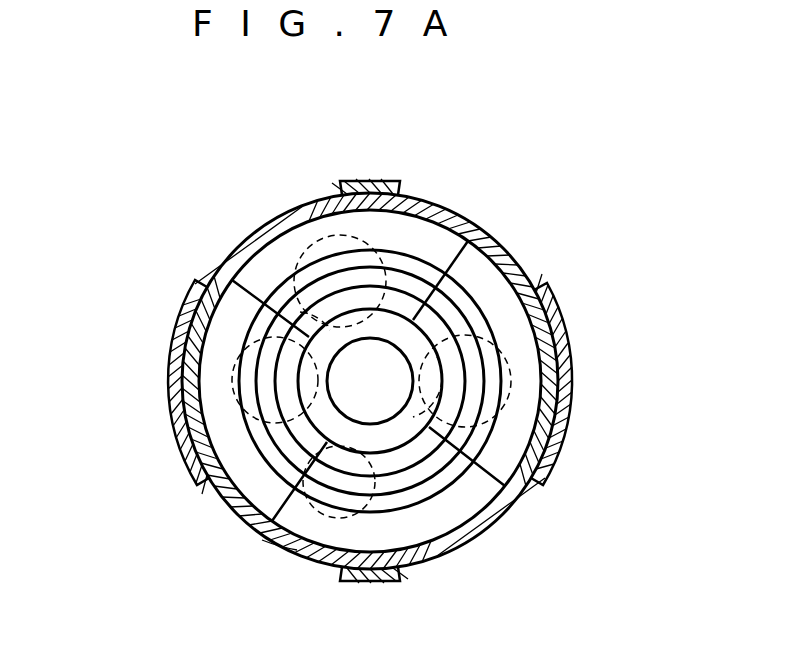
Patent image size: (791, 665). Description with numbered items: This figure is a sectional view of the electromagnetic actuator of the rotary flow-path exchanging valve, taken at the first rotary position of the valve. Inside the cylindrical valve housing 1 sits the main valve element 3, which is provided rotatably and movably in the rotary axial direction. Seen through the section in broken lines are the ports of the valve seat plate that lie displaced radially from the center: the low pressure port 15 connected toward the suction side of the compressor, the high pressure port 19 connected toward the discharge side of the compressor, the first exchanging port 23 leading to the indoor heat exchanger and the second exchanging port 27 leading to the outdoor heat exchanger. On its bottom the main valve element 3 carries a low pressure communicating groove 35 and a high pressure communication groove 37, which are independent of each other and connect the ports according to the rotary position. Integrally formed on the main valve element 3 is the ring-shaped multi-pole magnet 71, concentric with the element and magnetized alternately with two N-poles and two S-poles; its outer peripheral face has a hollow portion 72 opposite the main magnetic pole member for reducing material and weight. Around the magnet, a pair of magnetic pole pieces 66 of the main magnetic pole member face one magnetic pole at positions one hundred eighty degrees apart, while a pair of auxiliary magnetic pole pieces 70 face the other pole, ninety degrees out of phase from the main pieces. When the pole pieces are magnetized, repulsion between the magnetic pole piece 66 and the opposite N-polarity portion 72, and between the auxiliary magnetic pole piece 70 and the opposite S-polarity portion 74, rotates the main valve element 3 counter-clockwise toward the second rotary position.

The valve housing 1 is at (500, 520).
The main valve element 3 is at (297, 550).
The low pressure port 15 is at (240, 375).
The high pressure port 19 is at (517, 360).
The first exchanging port 23 is at (305, 232).
The second exchanging port 27 is at (262, 505).
The low pressure communicating groove 35 is at (300, 312).
The high pressure communication groove 37 is at (500, 303).
The magnetic pole pieces 66 is at (178, 348).
The auxiliary magnetic pole pieces 70 is at (370, 179).
The multi-pole magnet 71 is at (455, 213).
The hollow portion 72 is at (492, 277).
The S-polarity portion 74 is at (273, 257).